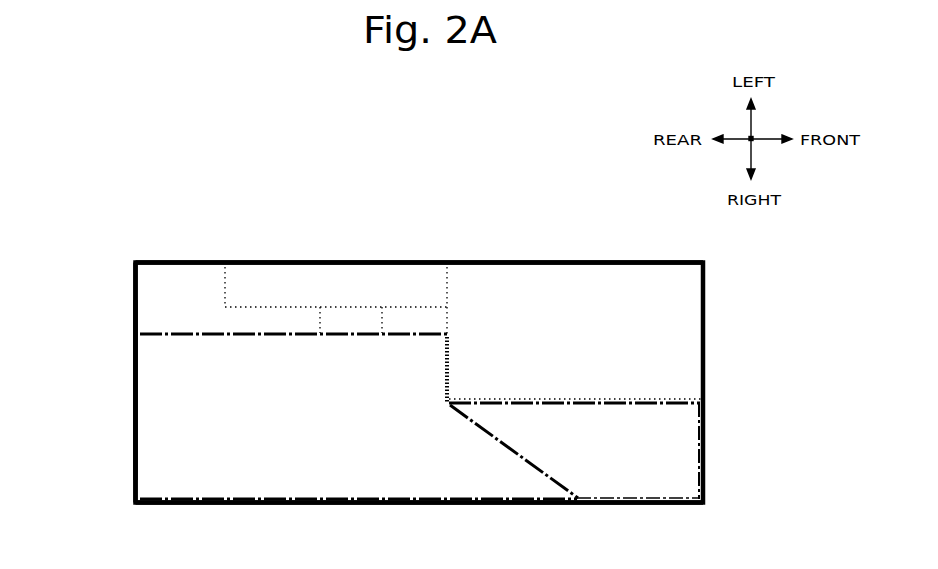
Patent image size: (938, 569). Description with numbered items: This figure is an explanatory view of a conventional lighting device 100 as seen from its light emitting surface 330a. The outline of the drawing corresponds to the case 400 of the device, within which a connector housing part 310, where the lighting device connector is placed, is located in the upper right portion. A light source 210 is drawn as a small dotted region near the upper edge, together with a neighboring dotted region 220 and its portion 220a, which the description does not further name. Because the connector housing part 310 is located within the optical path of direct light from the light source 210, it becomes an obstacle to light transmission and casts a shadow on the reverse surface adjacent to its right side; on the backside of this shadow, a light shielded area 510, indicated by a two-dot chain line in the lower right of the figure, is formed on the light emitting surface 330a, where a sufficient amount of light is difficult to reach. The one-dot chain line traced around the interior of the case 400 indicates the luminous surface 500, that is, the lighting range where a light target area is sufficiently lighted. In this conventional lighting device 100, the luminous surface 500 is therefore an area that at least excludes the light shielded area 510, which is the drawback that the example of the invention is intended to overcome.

The conventional lighting device 100 is at (161, 192).
The case 400 is at (146, 262).
The light emitting surface 330a is at (147, 314).
The luminous surface 500 is at (360, 496).
The upper module 220 is at (298, 267).
The module portion 220a is at (247, 307).
The light source 210 is at (369, 320).
The connector housing part 310 is at (537, 268).
The light shielded area 510 is at (697, 436).